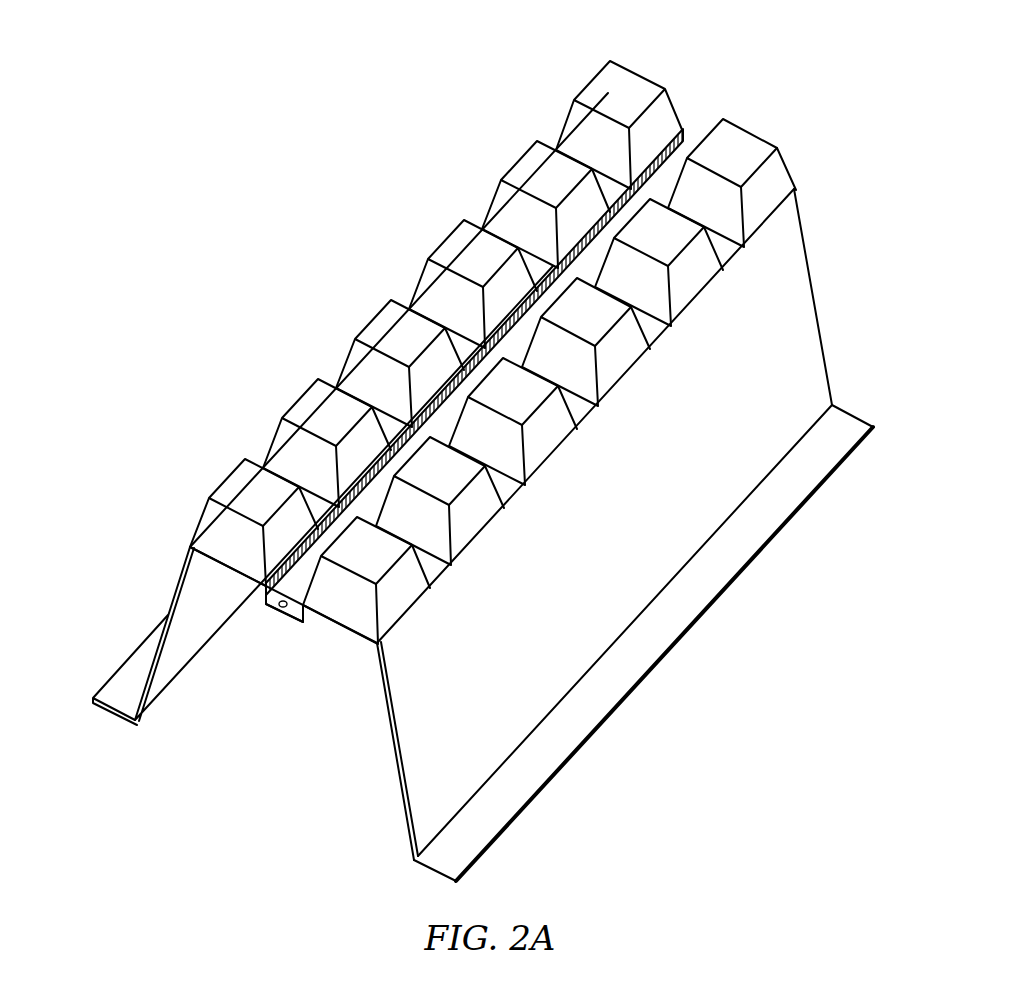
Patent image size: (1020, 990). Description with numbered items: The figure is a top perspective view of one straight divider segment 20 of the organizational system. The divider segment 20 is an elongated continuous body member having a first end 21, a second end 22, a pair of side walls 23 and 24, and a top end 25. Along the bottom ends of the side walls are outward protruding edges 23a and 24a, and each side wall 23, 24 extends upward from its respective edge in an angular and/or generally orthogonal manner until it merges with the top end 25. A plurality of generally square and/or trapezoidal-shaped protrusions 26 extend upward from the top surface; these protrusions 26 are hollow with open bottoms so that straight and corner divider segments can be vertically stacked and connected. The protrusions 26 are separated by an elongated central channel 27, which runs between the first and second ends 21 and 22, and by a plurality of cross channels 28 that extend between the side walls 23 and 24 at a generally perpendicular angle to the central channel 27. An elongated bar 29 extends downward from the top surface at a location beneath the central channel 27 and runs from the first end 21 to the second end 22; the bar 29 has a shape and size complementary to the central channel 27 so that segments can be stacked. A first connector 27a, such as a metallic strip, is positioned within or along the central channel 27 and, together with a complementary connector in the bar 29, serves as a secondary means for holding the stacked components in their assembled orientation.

The divider segment 20 is at (293, 131).
The first end 21 is at (275, 752).
The second end 22 is at (798, 152).
The side wall 23 is at (643, 490).
The outward protruding edge 23a is at (567, 727).
The side wall 24 is at (176, 590).
The outward protruding edge 24a is at (122, 678).
The top end 25 is at (447, 150).
The protrusion 26 is at (624, 76).
The central channel 27 is at (273, 610).
The first connector 27a is at (523, 297).
The cross channel 28 is at (652, 328).
The elongated bar 29 is at (302, 628).